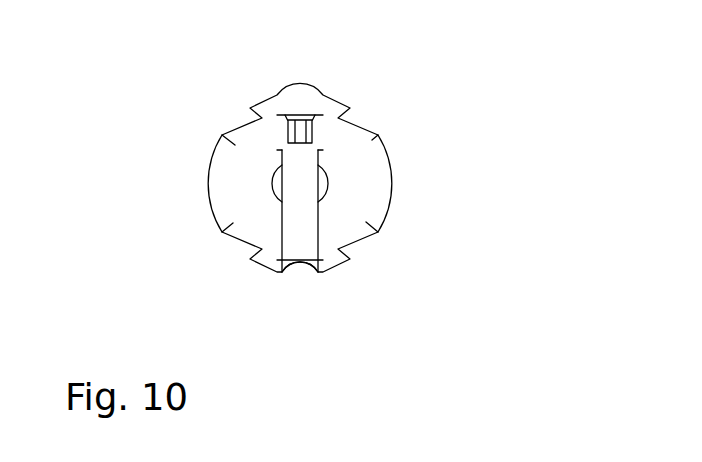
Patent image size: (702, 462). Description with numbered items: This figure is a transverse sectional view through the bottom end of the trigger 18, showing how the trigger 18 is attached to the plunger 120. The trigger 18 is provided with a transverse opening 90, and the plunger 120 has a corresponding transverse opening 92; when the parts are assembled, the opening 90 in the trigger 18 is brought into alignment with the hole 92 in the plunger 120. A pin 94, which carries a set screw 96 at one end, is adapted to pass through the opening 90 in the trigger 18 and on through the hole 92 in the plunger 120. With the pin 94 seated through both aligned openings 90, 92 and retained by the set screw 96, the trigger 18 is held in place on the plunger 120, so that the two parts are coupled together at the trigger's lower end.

The trigger 18 is at (257, 155).
The transverse opening 90 is at (287, 268).
The transverse opening 92 is at (318, 222).
The pin 94 is at (297, 203).
The set screw 96 is at (302, 120).
The plunger 120 is at (325, 183).